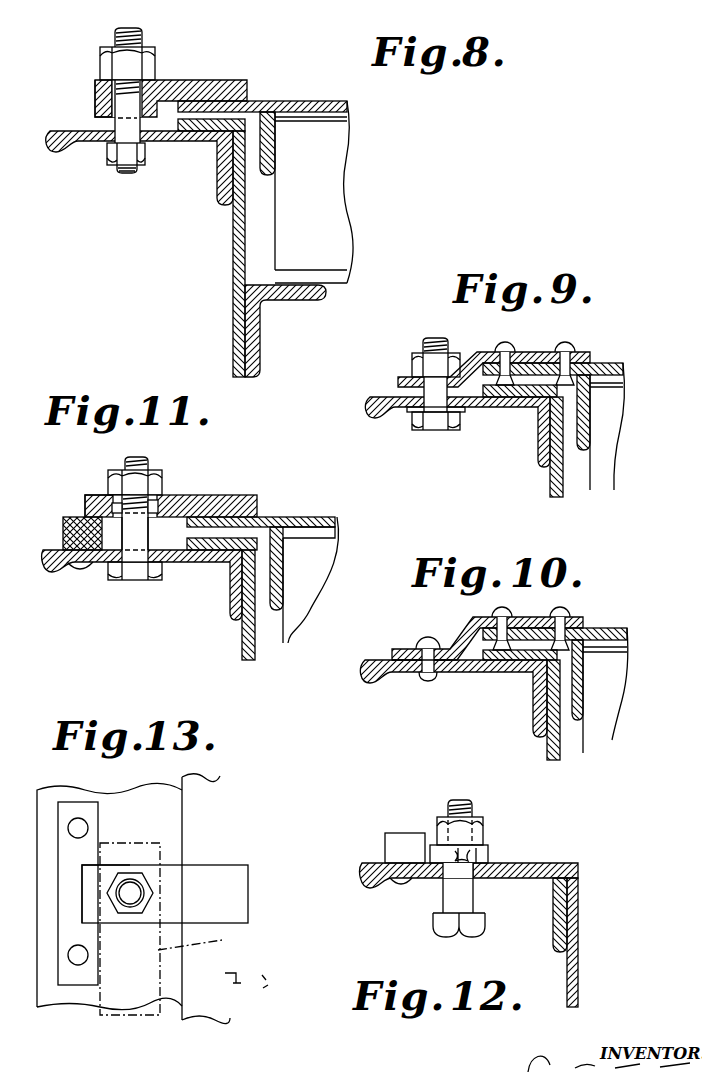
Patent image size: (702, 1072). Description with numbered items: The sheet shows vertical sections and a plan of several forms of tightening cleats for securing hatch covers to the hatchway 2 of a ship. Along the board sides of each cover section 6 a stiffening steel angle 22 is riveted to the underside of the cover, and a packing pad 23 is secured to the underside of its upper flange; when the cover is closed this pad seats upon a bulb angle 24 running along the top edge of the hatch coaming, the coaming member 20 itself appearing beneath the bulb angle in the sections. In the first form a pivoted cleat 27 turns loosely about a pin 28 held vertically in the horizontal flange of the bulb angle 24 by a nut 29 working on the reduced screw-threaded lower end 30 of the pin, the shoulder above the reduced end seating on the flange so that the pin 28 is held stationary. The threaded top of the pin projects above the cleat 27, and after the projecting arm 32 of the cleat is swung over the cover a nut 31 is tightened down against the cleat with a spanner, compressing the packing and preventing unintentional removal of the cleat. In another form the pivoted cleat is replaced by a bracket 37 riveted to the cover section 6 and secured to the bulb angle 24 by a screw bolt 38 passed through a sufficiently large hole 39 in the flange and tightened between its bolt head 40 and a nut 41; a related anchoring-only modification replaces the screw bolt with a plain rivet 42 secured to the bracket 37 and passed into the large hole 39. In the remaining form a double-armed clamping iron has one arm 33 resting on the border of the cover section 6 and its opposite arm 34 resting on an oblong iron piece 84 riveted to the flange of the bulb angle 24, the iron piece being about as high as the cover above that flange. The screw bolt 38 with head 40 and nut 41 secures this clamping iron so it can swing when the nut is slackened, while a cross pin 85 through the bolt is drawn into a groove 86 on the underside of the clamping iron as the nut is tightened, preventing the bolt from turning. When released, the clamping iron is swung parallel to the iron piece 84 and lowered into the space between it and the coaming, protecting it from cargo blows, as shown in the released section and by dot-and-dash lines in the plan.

In FIG. 9, the hatchway 2 is at (567, 467).
In FIG. 10, the hatchway 2 is at (563, 733).
In FIG. 11, the hatchway 2 is at (259, 623).
In FIG. 8, the cover section 6 is at (300, 101).
In FIG. 9, the cover section 6 is at (600, 363).
In FIG. 10, the cover section 6 is at (603, 628).
In FIG. 11, the cover section 6 is at (302, 517).
In FIG. 13, the cover section 6 is at (187, 787).
In FIG. 8, the angle bracket 20 is at (236, 250).
In FIG. 9, the angle bracket 20 is at (553, 480).
In FIG. 10, the angle bracket 20 is at (547, 748).
In FIG. 11, the angle bracket 20 is at (232, 615).
In FIG. 12, the angle bracket 20 is at (572, 970).
In FIG. 8, the steel angle 22 is at (270, 160).
In FIG. 9, the steel angle 22 is at (584, 415).
In FIG. 10, the steel angle 22 is at (577, 690).
In FIG. 11, the steel angle 22 is at (280, 598).
In FIG. 8, the pad 23 is at (210, 132).
In FIG. 9, the pad 23 is at (515, 392).
In FIG. 10, the pad 23 is at (507, 662).
In FIG. 11, the pad 23 is at (193, 543).
In FIG. 8, the bulb angle 24 is at (165, 141).
In FIG. 9, the bulb angle 24 is at (468, 408).
In FIG. 10, the bulb angle 24 is at (460, 673).
In FIG. 11, the bulb angle 24 is at (44, 563).
In FIG. 12, the bulb angle 24 is at (368, 881).
In FIG. 13, the bulb angle 24 is at (45, 800).
In FIG. 8, the pivoted cleat 27 is at (94, 95).
In FIG. 8, the pin 28 is at (127, 108).
In FIG. 8, the nut 29 is at (118, 151).
In FIG. 8, the reduced screw-threaded lower end 30 is at (120, 171).
In FIG. 8, the nut 31 is at (104, 58).
In FIG. 8, the projecting arm 32 is at (180, 80).
In FIG. 11, the arm of clamping iron 33 is at (233, 495).
In FIG. 12, the arm of clamping iron 33 is at (440, 847).
In FIG. 13, the arm of clamping iron 33 is at (220, 907).
In FIG. 11, the arm of clamping iron 34 is at (105, 495).
In FIG. 13, the arm of clamping iron 34 is at (88, 887).
In FIG. 9, the bracket 37 is at (533, 352).
In FIG. 10, the bracket 37 is at (466, 637).
In FIG. 9, the screw bolt 38 is at (438, 338).
In FIG. 11, the screw bolt 38 is at (146, 458).
In FIG. 12, the screw bolt 38 is at (473, 808).
In FIG. 13, the screw bolt 38 is at (132, 890).
In FIG. 9, the hole 39 is at (416, 412).
In FIG. 10, the hole 39 is at (417, 678).
In FIG. 9, the bolt head 40 is at (430, 420).
In FIG. 11, the bolt head 40 is at (133, 573).
In FIG. 12, the bolt head 40 is at (445, 925).
In FIG. 9, the nut 41 is at (420, 371).
In FIG. 11, the nut 41 is at (108, 480).
In FIG. 10, the plain rivet 42 is at (431, 682).
In FIG. 11, the oblong iron piece 84 is at (67, 517).
In FIG. 12, the oblong iron piece 84 is at (402, 843).
In FIG. 13, the oblong iron piece 84 is at (70, 977).
In FIG. 11, the cross pin 85 is at (117, 520).
In FIG. 12, the cross pin 85 is at (493, 879).
In FIG. 11, the groove 86 is at (158, 498).
In FIG. 12, the groove 86 is at (487, 851).